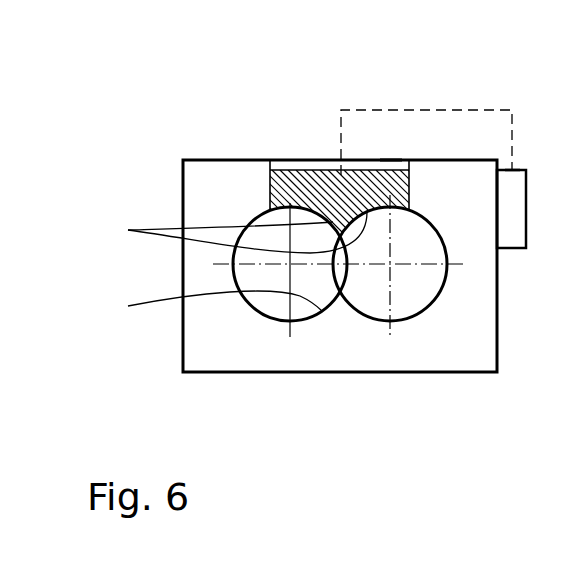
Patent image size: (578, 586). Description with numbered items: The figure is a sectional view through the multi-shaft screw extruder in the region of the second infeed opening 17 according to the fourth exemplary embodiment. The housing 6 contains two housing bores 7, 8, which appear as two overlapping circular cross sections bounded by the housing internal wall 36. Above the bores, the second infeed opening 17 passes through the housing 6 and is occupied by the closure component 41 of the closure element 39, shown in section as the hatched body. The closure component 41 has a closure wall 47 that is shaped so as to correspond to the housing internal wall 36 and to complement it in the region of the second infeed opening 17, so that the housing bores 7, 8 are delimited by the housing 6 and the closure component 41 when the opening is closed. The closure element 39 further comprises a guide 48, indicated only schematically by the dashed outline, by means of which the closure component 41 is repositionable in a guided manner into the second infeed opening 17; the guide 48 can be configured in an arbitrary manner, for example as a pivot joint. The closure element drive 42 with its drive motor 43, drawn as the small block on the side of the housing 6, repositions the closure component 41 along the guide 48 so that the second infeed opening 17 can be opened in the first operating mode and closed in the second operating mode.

The housing 6 is at (331, 372).
The housing bore 7 is at (280, 308).
The housing bore 8 is at (367, 305).
The second infeed opening 17 is at (307, 160).
The housing internal wall 36 is at (206, 307).
The closure element 39 is at (391, 161).
The closure component 41 is at (351, 175).
The closure element drive 42 is at (519, 170).
The drive motor 43 is at (513, 248).
The closure wall 47 is at (228, 232).
The guide 48 is at (469, 110).